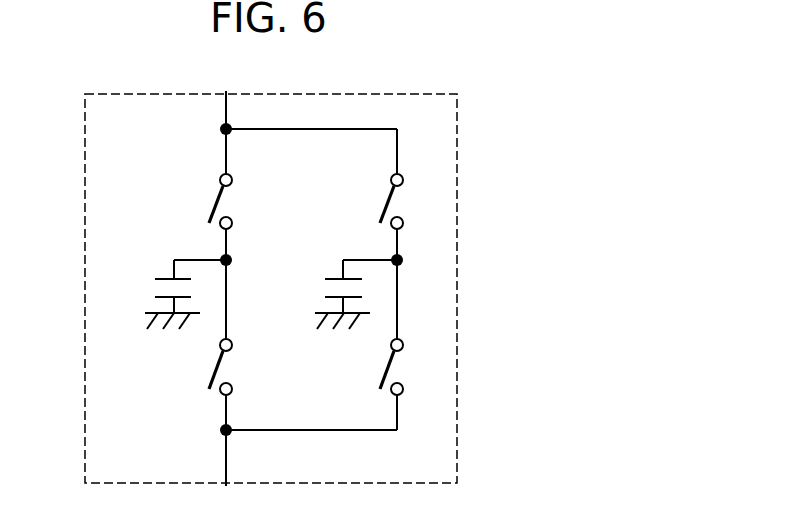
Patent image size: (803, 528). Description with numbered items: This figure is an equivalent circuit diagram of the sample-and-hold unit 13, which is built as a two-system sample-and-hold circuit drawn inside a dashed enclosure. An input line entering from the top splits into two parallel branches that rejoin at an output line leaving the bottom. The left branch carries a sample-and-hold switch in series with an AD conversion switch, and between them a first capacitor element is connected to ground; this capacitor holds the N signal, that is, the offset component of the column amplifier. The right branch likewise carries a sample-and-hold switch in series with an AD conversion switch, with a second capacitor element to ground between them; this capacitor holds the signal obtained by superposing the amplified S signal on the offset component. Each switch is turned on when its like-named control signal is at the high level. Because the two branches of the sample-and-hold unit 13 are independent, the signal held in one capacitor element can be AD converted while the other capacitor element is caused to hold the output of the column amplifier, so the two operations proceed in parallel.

The sample-and-hold unit 13 is at (359, 288).